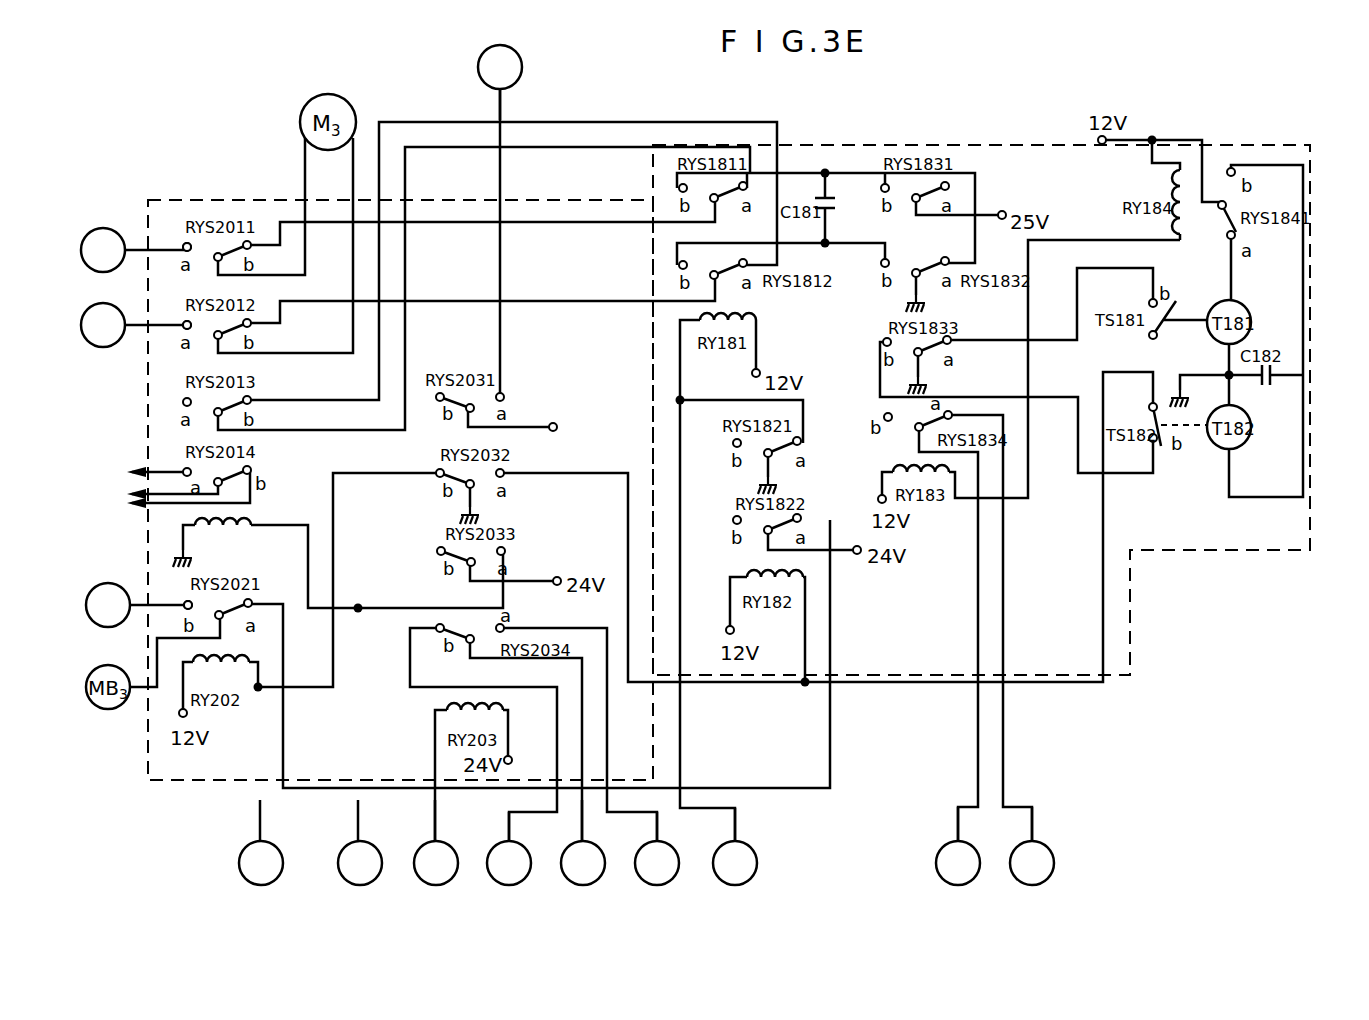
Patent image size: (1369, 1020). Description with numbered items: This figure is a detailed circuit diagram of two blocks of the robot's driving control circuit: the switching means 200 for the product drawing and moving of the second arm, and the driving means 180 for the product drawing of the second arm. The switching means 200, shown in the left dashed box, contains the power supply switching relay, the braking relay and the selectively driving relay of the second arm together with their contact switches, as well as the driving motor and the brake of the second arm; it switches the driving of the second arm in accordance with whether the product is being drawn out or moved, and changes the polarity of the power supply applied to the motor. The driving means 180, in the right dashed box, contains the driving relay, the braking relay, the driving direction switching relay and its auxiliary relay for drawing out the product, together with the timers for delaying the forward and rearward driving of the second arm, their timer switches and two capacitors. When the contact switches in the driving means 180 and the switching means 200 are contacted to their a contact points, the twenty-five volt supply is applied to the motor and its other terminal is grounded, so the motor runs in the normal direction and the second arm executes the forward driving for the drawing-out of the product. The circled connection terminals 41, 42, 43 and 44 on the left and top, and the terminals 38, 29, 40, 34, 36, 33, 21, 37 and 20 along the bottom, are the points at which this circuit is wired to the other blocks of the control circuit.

The switching means for the product drawing/moving of second arm 200 is at (160, 200).
The driving means for the product drawing of second arm 180 is at (1130, 600).
The connection terminal 41 is at (136, 250).
The connection terminal 42 is at (136, 325).
The connection terminal 43 is at (139, 605).
The connection terminal 44 is at (500, 82).
The connection terminal 38 is at (261, 842).
The connection terminal 29 is at (360, 842).
The connection terminal 40 is at (436, 842).
The connection terminal 34 is at (509, 848).
The connection terminal 36 is at (583, 842).
The connection terminal 33 is at (657, 848).
The connection terminal 21 is at (735, 846).
The connection terminal 37 is at (958, 846).
The connection terminal 20 is at (1032, 846).